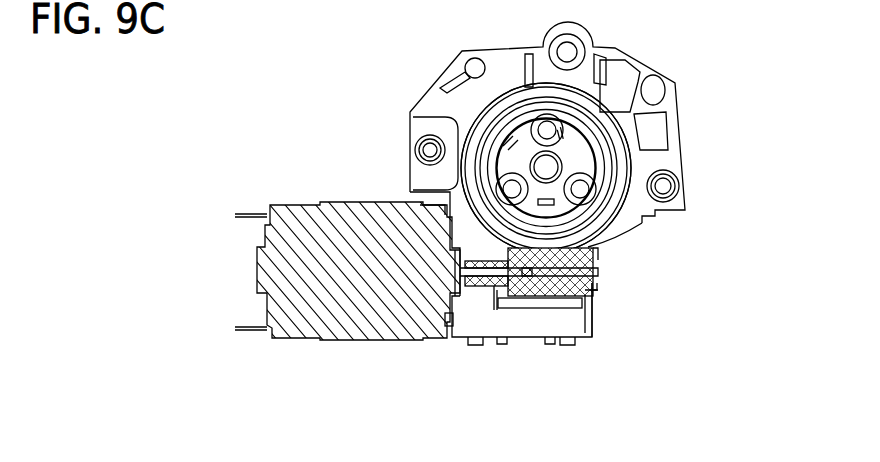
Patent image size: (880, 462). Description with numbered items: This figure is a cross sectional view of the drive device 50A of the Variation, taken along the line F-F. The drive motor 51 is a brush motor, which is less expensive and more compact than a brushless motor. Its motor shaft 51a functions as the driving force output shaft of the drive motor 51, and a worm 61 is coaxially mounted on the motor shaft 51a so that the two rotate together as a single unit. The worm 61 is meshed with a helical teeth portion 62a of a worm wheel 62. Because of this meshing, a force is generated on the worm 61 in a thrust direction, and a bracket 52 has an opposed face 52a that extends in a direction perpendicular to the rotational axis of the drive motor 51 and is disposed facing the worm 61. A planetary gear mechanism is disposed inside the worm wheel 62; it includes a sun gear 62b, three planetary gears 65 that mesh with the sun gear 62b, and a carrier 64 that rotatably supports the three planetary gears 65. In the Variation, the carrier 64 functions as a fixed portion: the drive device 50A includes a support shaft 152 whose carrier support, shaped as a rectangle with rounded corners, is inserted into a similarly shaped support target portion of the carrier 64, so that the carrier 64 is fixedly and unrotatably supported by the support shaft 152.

The drive device 50A is at (728, 62).
The drive motor 51 is at (358, 201).
The motor shaft 51a is at (496, 288).
The bracket 52 is at (513, 346).
The opposed face 52a is at (592, 328).
The worm 61 is at (560, 310).
The worm wheel 62 is at (742, 203).
The helical teeth portion 62a is at (612, 226).
The sun gear 62b is at (573, 164).
The carrier 64 is at (569, 134).
The planetary gears 65 is at (505, 173).
The support shaft 152 is at (560, 158).